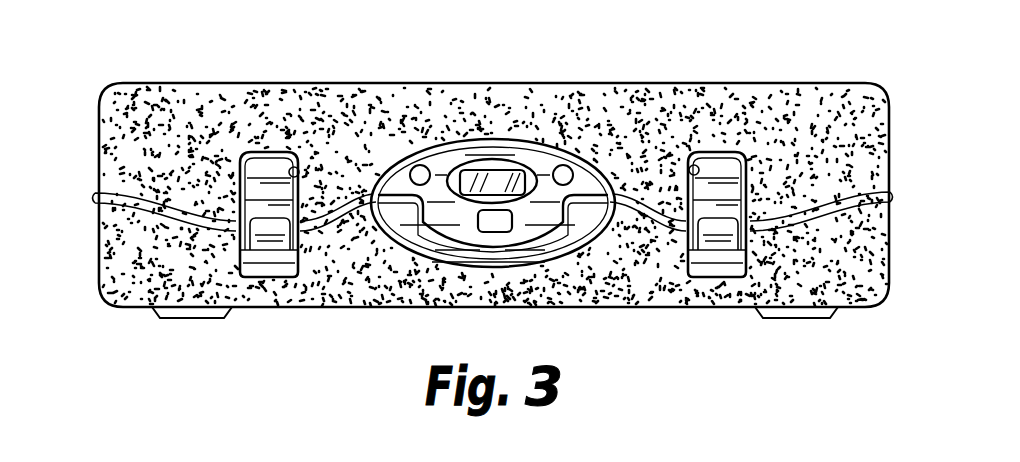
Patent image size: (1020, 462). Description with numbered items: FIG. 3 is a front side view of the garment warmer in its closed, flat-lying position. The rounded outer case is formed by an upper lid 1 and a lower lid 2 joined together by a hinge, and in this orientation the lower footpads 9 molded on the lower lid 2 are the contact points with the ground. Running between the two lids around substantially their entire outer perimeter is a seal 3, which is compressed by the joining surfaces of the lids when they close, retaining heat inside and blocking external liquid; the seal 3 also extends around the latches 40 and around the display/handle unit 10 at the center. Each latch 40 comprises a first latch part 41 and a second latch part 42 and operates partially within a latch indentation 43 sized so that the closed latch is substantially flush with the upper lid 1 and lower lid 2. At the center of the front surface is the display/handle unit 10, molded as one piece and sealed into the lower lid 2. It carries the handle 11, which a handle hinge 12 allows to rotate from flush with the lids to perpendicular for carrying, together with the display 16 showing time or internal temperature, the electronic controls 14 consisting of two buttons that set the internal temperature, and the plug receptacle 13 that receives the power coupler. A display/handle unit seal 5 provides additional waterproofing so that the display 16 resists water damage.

The upper lid 1 is at (150, 107).
The lower lid 2 is at (113, 263).
The seal 3 is at (95, 200).
The display/handle unit seal 5 is at (471, 160).
The lower footpads 9 is at (193, 320).
The display/handle unit 10 is at (464, 265).
The handle 11 is at (410, 226).
The handle hinge 12 is at (420, 250).
The plug receptacle 13 is at (494, 233).
The electronic controls 14 is at (422, 165).
The display 16 is at (497, 182).
The latch 40 is at (249, 153).
The first latch part 41 is at (266, 172).
The second latch part 42 is at (268, 244).
The latch indentation 43 is at (299, 172).